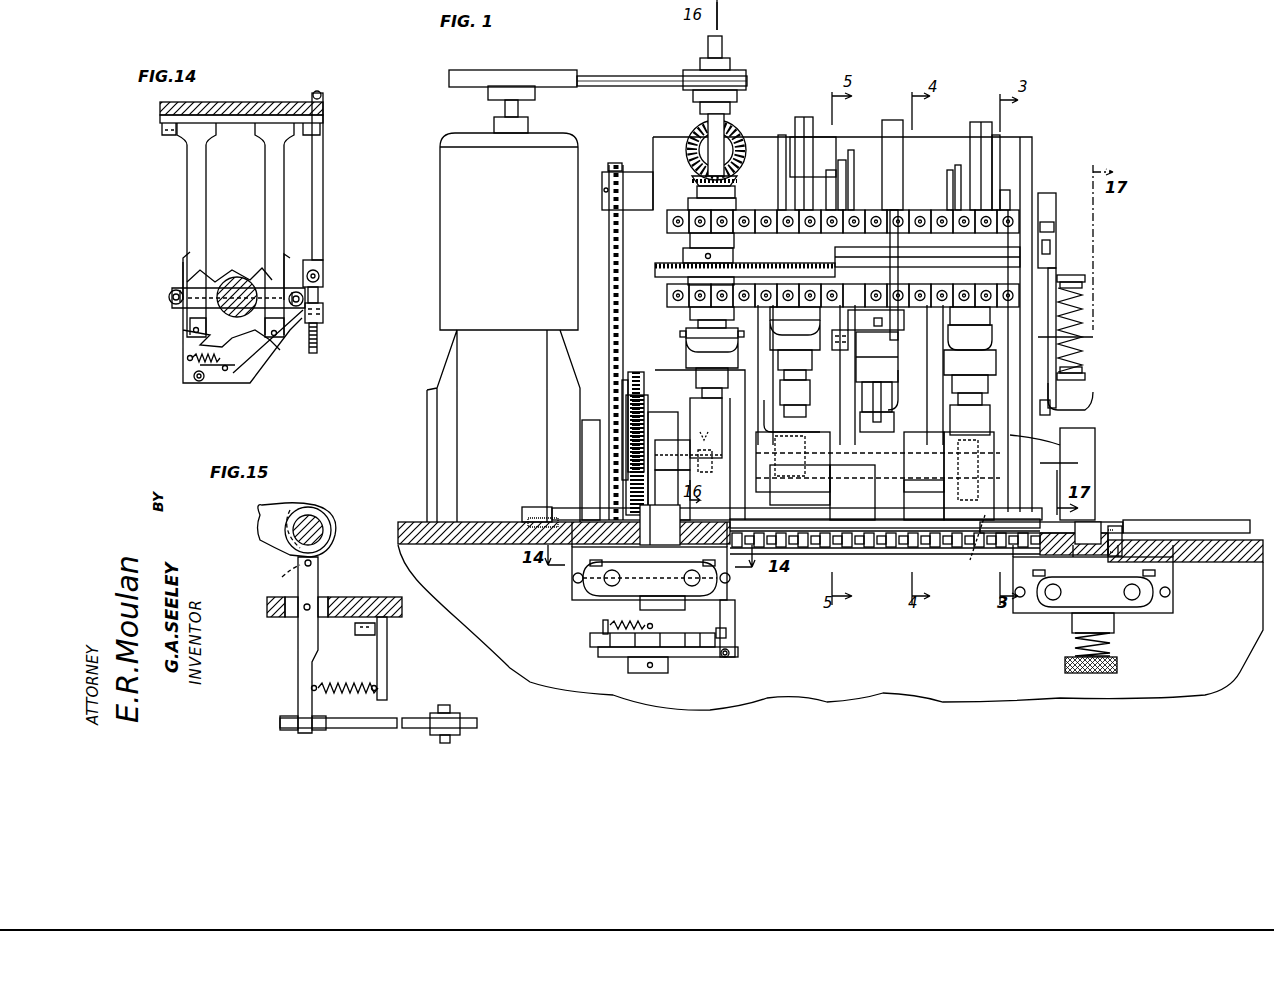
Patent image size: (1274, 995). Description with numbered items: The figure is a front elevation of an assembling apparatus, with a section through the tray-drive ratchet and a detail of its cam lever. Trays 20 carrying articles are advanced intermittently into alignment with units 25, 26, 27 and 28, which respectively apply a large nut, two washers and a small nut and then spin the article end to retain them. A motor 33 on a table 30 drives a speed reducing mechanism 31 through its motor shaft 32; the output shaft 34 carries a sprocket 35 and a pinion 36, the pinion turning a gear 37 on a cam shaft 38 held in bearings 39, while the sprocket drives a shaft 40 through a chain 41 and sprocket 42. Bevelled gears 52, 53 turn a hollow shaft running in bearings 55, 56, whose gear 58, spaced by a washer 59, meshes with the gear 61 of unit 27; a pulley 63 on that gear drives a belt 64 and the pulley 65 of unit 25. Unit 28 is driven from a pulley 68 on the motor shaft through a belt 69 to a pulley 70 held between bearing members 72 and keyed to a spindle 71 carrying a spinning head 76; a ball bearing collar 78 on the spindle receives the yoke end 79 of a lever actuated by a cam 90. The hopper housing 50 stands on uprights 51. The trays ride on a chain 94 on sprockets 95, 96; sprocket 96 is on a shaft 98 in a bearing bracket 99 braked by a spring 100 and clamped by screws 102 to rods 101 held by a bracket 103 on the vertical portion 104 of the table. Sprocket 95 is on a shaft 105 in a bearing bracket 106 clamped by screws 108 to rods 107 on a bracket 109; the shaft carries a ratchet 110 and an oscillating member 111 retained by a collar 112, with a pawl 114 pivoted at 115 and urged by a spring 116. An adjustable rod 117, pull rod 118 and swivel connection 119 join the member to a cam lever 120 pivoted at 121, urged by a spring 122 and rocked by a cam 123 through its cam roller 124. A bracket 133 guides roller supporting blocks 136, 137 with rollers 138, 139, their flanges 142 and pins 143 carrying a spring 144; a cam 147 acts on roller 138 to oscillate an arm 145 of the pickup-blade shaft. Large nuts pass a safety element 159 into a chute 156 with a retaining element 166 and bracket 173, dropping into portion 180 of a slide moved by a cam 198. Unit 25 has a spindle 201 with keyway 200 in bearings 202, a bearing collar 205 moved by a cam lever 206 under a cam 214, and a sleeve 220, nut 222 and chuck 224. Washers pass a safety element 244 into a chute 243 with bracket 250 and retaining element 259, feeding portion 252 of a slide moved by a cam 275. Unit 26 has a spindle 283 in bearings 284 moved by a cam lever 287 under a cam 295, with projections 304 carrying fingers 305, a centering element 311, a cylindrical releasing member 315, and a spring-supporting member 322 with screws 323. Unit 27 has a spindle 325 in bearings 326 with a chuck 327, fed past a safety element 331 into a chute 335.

In FIG. 1, the trays 20 is at (1183, 522).
In FIG. 1, the unit 25 is at (969, 106).
In FIG. 1, the unit 26 is at (886, 108).
In FIG. 1, the unit 27 is at (803, 108).
In FIG. 1, the unit 28 is at (742, 100).
In FIG. 1, the table 30 is at (410, 520).
In FIG. 15, the table 30 is at (396, 620).
In FIG. 1, the speed reducing mechanism 31 is at (437, 468).
In FIG. 1, the motor shaft 32 is at (505, 107).
In FIG. 1, the motor 33 is at (440, 195).
In FIG. 1, the shaft 34 is at (591, 420).
In FIG. 1, the sprocket 35 is at (625, 380).
In FIG. 1, the pinion 36 is at (646, 405).
In FIG. 1, the gear 37 is at (637, 374).
In FIG. 1, the cam shaft 38 is at (675, 460).
In FIG. 15, the cam shaft 38 is at (310, 515).
In FIG. 1, the bearings 39 is at (676, 420).
In FIG. 1, the shaft 40 is at (638, 172).
In FIG. 1, the chain 41 is at (609, 262).
In FIG. 1, the sprocket 42 is at (612, 163).
In FIG. 1, the hopper housing 50 is at (1032, 140).
In FIG. 1, the uprights 51 is at (745, 372).
In FIG. 1, the bevelled gear 52 is at (686, 150).
In FIG. 1, the bevelled gear 53 is at (692, 178).
In FIG. 1, the bearing 55 is at (690, 238).
In FIG. 1, the bearing 56 is at (690, 312).
In FIG. 1, the gear 58 is at (662, 277).
In FIG. 1, the washer 59 is at (683, 248).
In FIG. 1, the gear 61 is at (843, 295).
In FIG. 1, the pulley 63 is at (824, 212).
In FIG. 1, the belt 64 is at (925, 247).
In FIG. 1, the pulley 65 is at (1042, 338).
In FIG. 1, the pulley 68 is at (462, 70).
In FIG. 1, the belt 69 is at (628, 76).
In FIG. 1, the pulley 70 is at (735, 72).
In FIG. 1, the spindle 71 is at (722, 46).
In FIG. 1, the bearing members 72 is at (700, 62).
In FIG. 1, the spinning head 76 is at (671, 454).
In FIG. 1, the ball bearing collar 78 is at (696, 358).
In FIG. 1, the yoke end 79 is at (686, 334).
In FIG. 1, the cam 90 is at (704, 427).
In FIG. 1, the chain 94 is at (848, 554).
In FIG. 1, the sprocket 95 is at (572, 507).
In FIG. 1, the sprocket 96 is at (1116, 528).
In FIG. 1, the shaft 98 is at (1090, 530).
In FIG. 1, the bearing bracket 99 is at (1135, 612).
In FIG. 1, the spring 100 is at (1112, 645).
In FIG. 1, the supporting rods 101 is at (1124, 592).
In FIG. 1, the screws 102 is at (1158, 575).
In FIG. 1, the bracket 103 is at (1168, 582).
In FIG. 1, the vertical portion 104 is at (1170, 688).
In FIG. 14, the vertical portion 104 is at (245, 105).
In FIG. 1, the shaft 105 is at (655, 515).
In FIG. 1, the bearing bracket 106 is at (612, 588).
In FIG. 14, the bearing bracket 106 is at (170, 295).
In FIG. 1, the supporting rods 107 is at (692, 588).
In FIG. 14, the supporting rods 107 is at (272, 185).
In FIG. 1, the screws 108 is at (690, 575).
In FIG. 14, the screws 108 is at (177, 290).
In FIG. 1, the bracket 109 is at (572, 582).
In FIG. 14, the bracket 109 is at (162, 124).
In FIG. 1, the ratchet 110 is at (592, 640).
In FIG. 14, the ratchet 110 is at (237, 240).
In FIG. 1, the oscillating member 111 is at (608, 657).
In FIG. 14, the oscillating member 111 is at (260, 375).
In FIG. 1, the collar 112 is at (665, 668).
In FIG. 14, the pawl 114 is at (230, 372).
In FIG. 14, the pivot 115 is at (196, 382).
In FIG. 1, the spring 116 is at (604, 622).
In FIG. 14, the spring 116 is at (188, 360).
In FIG. 1, the adjustable rod 117 is at (727, 660).
In FIG. 14, the adjustable rod 117 is at (322, 298).
In FIG. 15, the adjustable rod 117 is at (458, 733).
In FIG. 14, the pull rod 118 is at (318, 220).
In FIG. 15, the pull rod 118 is at (385, 730).
In FIG. 14, the swivel connection 119 is at (322, 274).
In FIG. 15, the swivel connection 119 is at (441, 713).
In FIG. 1, the cam lever 120 is at (735, 636).
In FIG. 15, the cam lever 120 is at (298, 672).
In FIG. 15, the pivot 121 is at (313, 604).
In FIG. 15, the spring 122 is at (360, 682).
In FIG. 1, the cam 123 is at (706, 435).
In FIG. 15, the cam 123 is at (262, 520).
In FIG. 15, the cam roller 124 is at (278, 567).
In FIG. 1, the bracket 133 is at (1083, 340).
In FIG. 1, the roller supporting block 136 is at (1086, 394).
In FIG. 1, the roller supporting block 137 is at (1064, 241).
In FIG. 1, the roller 138 is at (1052, 415).
In FIG. 1, the roller 139 is at (1050, 228).
In FIG. 1, the flanges 142 is at (1062, 275).
In FIG. 1, the pins 143 is at (1080, 286).
In FIG. 1, the spring 144 is at (1078, 318).
In FIG. 1, the arm 145 is at (1045, 193).
In FIG. 1, the cam 147 is at (1067, 462).
In FIG. 1, the chute 156 is at (948, 172).
In FIG. 1, the safety element 159 is at (960, 165).
In FIG. 1, the retaining element 166 is at (910, 377).
In FIG. 1, the bracket 173 is at (924, 462).
In FIG. 1, the portion 180 is at (990, 502).
In FIG. 1, the cam 198 is at (944, 506).
In FIG. 1, the keyway 200 is at (970, 126).
In FIG. 1, the spindle 201 is at (998, 135).
In FIG. 1, the bearings 202 is at (1009, 195).
In FIG. 1, the bearing collar 205 is at (940, 350).
In FIG. 1, the cam lever 206 is at (970, 391).
In FIG. 1, the cam 214 is at (967, 543).
In FIG. 1, the sleeve 220 is at (938, 375).
In FIG. 1, the nut 222 is at (958, 425).
In FIG. 1, the chuck 224 is at (945, 485).
In FIG. 1, the chute 243 is at (834, 179).
In FIG. 1, the safety element 244 is at (863, 175).
In FIG. 1, the bracket 250 is at (832, 432).
In FIG. 1, the portion 252 is at (858, 480).
In FIG. 1, the retaining element 259 is at (885, 373).
In FIG. 1, the cam 275 is at (860, 500).
In FIG. 1, the spindle 283 is at (882, 124).
In FIG. 1, the bearings 284 is at (895, 210).
In FIG. 1, the cam lever 287 is at (890, 322).
In FIG. 1, the cam 295 is at (900, 502).
In FIG. 1, the projections 304 is at (896, 420).
In FIG. 1, the fingers 305 is at (893, 395).
In FIG. 1, the centering element 311 is at (850, 458).
In FIG. 1, the cylindrical releasing member 315 is at (945, 385).
In FIG. 1, the member 322 is at (877, 357).
In FIG. 1, the screws 323 is at (832, 345).
In FIG. 1, the spindle 325 is at (795, 137).
In FIG. 1, the bearings 326 is at (832, 187).
In FIG. 1, the chuck 327 is at (810, 410).
In FIG. 1, the safety element 331 is at (784, 178).
In FIG. 1, the chute 335 is at (795, 346).